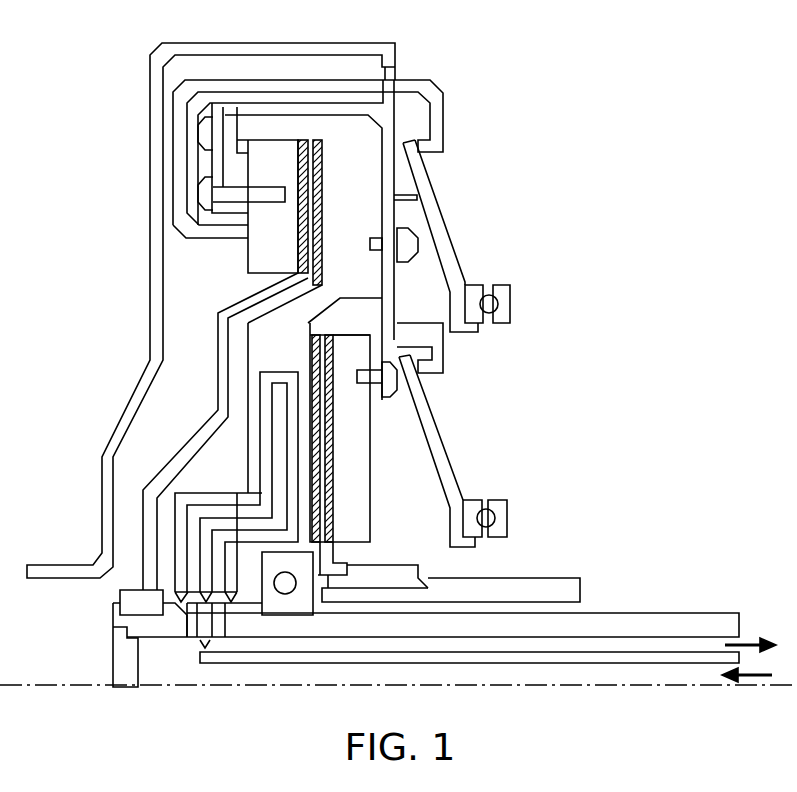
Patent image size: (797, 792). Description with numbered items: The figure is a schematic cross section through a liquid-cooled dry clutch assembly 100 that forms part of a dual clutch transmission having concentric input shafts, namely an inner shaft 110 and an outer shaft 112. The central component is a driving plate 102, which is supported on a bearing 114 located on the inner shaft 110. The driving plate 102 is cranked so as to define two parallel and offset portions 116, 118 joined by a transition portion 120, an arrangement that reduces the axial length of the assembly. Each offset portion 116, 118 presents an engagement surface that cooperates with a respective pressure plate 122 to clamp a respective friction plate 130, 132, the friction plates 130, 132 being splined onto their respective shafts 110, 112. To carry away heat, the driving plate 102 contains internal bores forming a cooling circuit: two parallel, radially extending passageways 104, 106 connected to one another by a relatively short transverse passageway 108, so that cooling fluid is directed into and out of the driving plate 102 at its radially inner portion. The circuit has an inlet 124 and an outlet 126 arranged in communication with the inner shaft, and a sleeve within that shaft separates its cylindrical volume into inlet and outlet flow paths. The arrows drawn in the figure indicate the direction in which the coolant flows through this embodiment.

The liquid-cooled dry clutch assembly 100 is at (107, 243).
The driving plate 102 is at (370, 209).
The radially extending passageway 104 is at (267, 397).
The radially extending passageway 106 is at (302, 432).
The transverse passageway 108 is at (280, 377).
The inner shaft 110 is at (713, 622).
The outer shaft 112 is at (558, 585).
The bearing 114 is at (287, 605).
The offset portion 116 is at (253, 443).
The offset portion 118 is at (350, 153).
The transition portion 120 is at (402, 325).
The pressure plate 122 is at (273, 152).
The inlet 124 is at (197, 605).
The outlet 126 is at (227, 605).
The friction plate 130 is at (322, 523).
The friction plate 132 is at (300, 253).